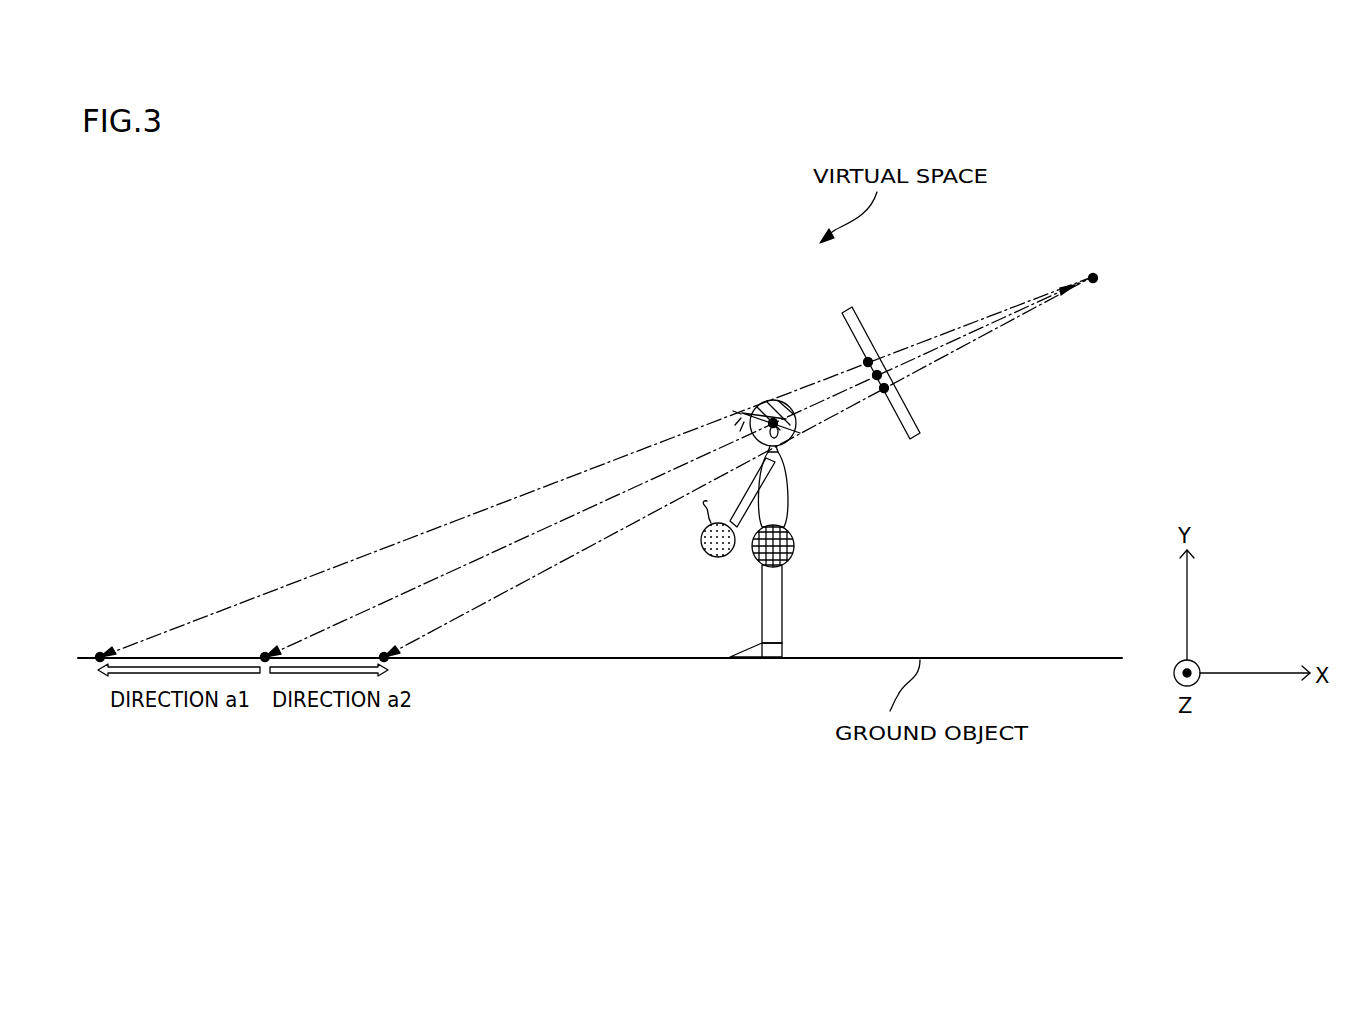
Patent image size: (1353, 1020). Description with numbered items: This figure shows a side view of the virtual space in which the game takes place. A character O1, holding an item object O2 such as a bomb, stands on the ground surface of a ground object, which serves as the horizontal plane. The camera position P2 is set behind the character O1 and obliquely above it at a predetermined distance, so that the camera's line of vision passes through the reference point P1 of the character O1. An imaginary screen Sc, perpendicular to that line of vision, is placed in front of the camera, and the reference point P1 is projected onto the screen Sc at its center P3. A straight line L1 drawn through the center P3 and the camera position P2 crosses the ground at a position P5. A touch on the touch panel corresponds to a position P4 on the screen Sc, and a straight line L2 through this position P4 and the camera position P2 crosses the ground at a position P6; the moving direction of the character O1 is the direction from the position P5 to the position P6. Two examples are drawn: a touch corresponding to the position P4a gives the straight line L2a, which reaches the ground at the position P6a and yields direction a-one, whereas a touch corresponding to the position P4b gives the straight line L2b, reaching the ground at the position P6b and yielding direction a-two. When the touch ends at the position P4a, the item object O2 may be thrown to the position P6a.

The screen Sc is at (840, 313).
The reference point P1 is at (780, 424).
The camera position P2 is at (1104, 261).
The center of screen P3 is at (880, 365).
The touched position on screen P4 is at (880, 373).
The first touched position on screen P4a is at (862, 362).
The second touched position on screen P4b is at (893, 388).
The crossing position of straight line L1 P5 is at (263, 656).
The crossing position of straight line L2 P6 is at (216, 619).
The first crossing position of straight line L2a P6a is at (97, 656).
The second crossing position of straight line L2b P6b is at (382, 655).
The character O1 is at (782, 493).
The item object O2 is at (720, 545).
The straight line L1 is at (547, 527).
The straight line L2 is at (596, 467).
The first straight line L2a is at (647, 425).
The second straight line L2b is at (582, 547).